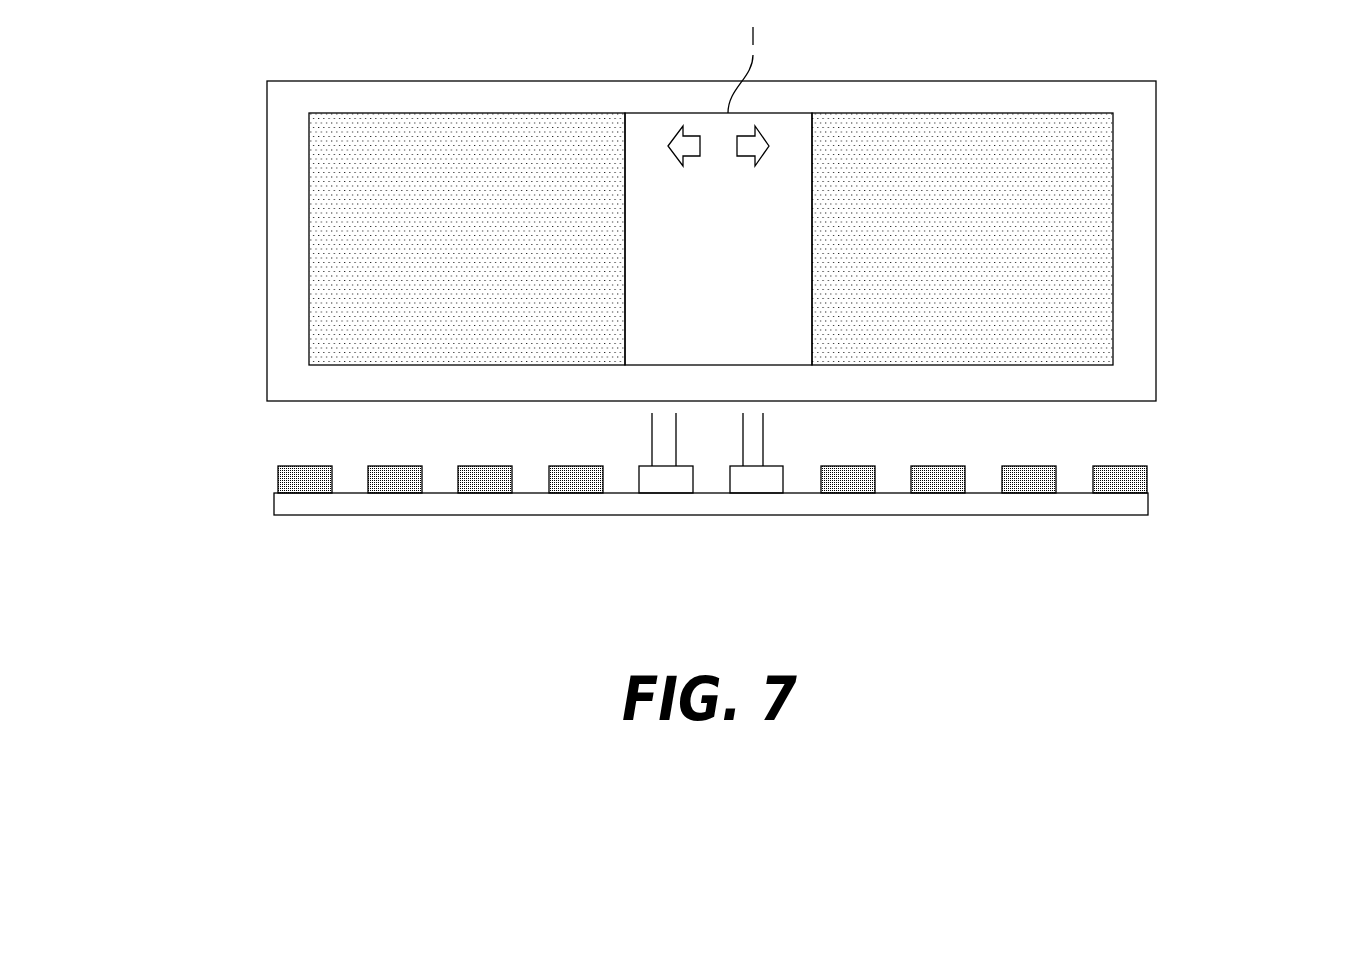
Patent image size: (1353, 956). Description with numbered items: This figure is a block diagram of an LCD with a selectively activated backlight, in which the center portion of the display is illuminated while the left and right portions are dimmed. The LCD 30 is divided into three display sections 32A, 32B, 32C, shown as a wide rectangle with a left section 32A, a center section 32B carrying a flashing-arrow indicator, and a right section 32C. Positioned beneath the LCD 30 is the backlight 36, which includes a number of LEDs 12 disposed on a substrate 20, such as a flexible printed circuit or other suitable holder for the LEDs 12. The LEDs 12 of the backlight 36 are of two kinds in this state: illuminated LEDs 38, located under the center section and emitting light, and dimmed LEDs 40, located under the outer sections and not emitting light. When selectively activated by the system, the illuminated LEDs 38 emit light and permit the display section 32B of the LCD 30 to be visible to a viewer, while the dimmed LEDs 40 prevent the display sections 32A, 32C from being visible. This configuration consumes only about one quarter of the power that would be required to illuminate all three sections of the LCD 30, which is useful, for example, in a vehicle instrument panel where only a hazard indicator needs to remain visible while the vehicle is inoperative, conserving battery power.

The LEDs 12 is at (246, 480).
The substrate 20 is at (1150, 506).
The LCD 30 is at (1157, 202).
The display section 32A is at (472, 113).
The display section 32B is at (645, 113).
The display section 32C is at (968, 113).
The backlight 36 is at (1207, 470).
The illuminated LEDs 38 is at (757, 493).
The dimmed LEDs 40 is at (577, 493).